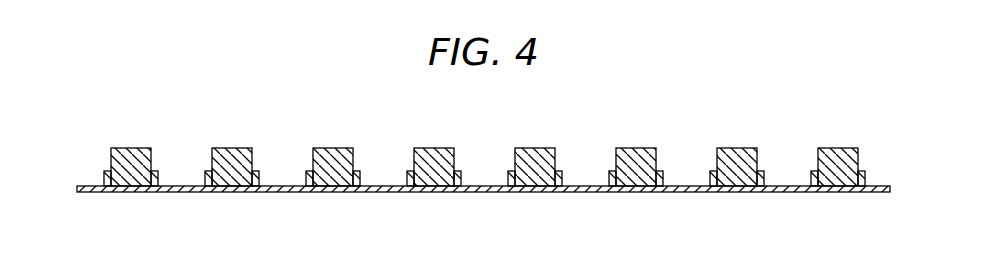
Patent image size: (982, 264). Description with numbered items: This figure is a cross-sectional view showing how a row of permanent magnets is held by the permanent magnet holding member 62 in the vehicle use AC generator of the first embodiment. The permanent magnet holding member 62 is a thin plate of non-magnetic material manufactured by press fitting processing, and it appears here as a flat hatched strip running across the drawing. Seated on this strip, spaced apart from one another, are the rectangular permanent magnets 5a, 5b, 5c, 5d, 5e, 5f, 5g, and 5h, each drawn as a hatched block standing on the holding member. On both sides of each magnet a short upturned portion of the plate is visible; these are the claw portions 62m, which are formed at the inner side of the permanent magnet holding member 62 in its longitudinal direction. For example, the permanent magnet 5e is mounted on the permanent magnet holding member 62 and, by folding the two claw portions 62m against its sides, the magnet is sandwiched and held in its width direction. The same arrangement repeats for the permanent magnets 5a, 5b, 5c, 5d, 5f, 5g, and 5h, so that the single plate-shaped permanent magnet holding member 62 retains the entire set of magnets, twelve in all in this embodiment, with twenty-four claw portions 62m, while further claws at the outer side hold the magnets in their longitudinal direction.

The permanent magnet 5a is at (128, 153).
The permanent magnet 5b is at (229, 153).
The permanent magnet 5c is at (330, 153).
The permanent magnet 5d is at (431, 153).
The permanent magnet 5e is at (538, 153).
The permanent magnet 5f is at (635, 153).
The permanent magnet 5g is at (737, 153).
The permanent magnet 5h is at (840, 153).
The permanent magnet holding member 62 is at (483, 192).
The claw portion 62m is at (507, 170).